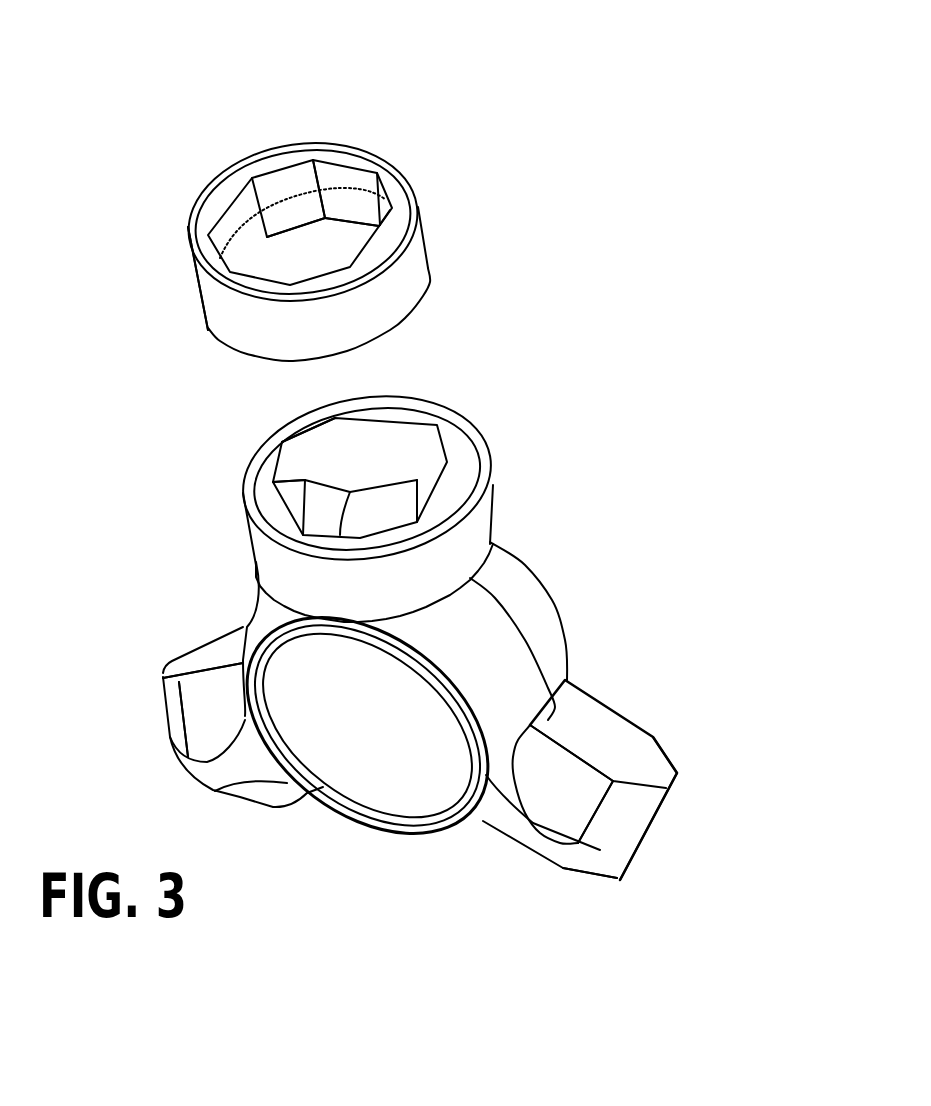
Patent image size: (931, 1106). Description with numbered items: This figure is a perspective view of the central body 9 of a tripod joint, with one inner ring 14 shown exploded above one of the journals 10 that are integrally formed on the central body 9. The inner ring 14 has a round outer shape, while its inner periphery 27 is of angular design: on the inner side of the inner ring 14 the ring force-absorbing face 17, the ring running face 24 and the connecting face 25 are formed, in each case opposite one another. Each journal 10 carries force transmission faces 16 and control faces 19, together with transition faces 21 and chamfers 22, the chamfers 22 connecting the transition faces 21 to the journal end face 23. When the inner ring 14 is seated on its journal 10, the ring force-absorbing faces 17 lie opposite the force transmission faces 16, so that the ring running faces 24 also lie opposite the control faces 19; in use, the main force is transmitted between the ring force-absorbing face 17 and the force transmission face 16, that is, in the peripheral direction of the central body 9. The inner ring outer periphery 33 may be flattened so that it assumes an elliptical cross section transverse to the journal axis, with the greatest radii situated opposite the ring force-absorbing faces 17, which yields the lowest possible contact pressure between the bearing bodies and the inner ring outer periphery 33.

The central body 9 is at (543, 627).
The journal 10 is at (323, 465).
The inner ring 14 is at (410, 260).
The force transmission face 16 is at (350, 492).
The ring force-absorbing face 17 is at (233, 227).
The control face 19 is at (445, 425).
The transition face 21 is at (212, 713).
The chamfer 22 is at (607, 833).
The journal end face 23 is at (310, 440).
The ring running face 24 is at (360, 180).
The connecting face 25 is at (290, 183).
The inner periphery 27 is at (340, 190).
The inner ring outer periphery 33 is at (262, 318).